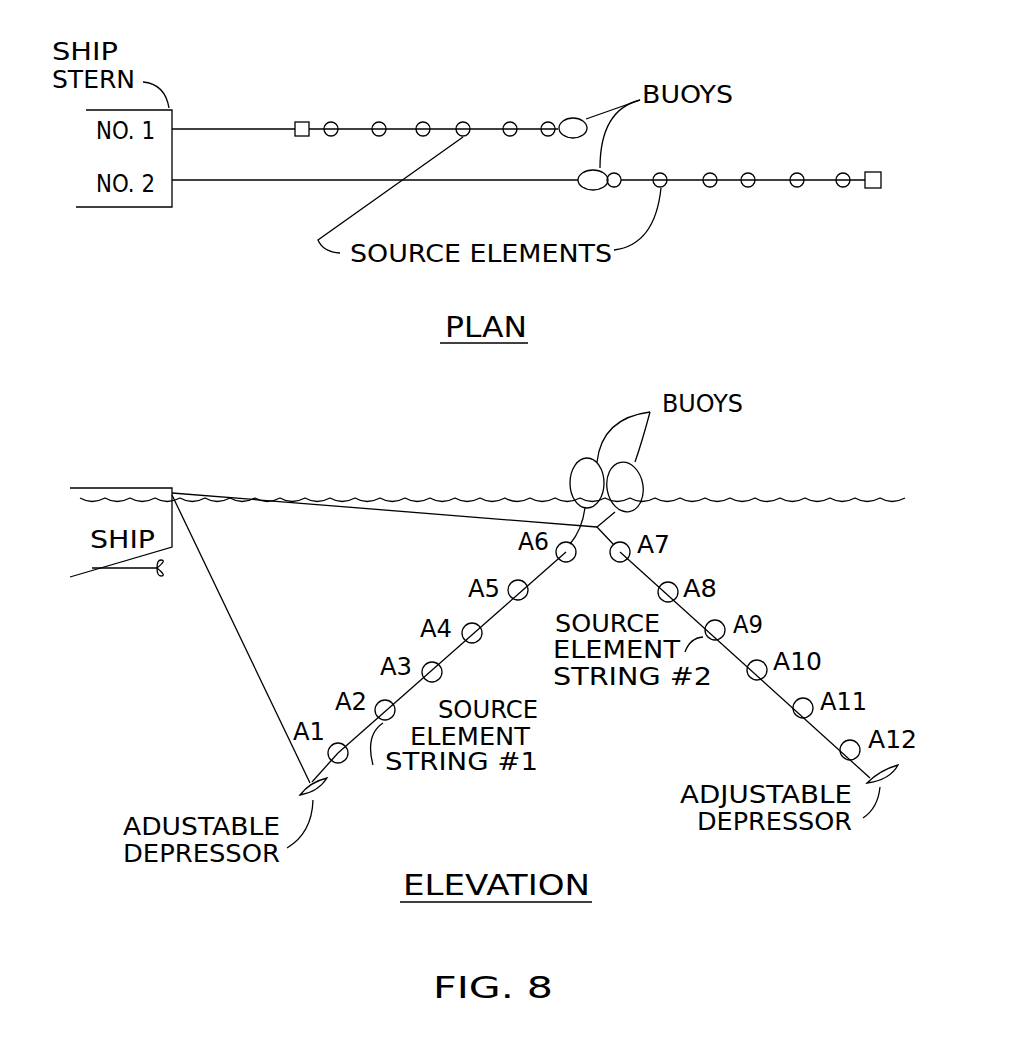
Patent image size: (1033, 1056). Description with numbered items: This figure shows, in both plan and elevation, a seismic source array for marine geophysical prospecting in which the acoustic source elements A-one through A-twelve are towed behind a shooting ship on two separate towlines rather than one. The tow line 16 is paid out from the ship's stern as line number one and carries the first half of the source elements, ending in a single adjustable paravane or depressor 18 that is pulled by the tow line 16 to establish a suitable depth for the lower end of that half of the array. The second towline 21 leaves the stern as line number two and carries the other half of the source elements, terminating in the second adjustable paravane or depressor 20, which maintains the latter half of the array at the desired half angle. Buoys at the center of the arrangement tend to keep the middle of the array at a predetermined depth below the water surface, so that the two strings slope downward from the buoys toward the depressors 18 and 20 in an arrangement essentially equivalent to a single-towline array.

The adjustable paravane or depressor 18 is at (299, 120).
The second adjustable paravane or depressor 20 is at (882, 188).
The towline 21 is at (462, 517).
The tow line 16 is at (269, 699).